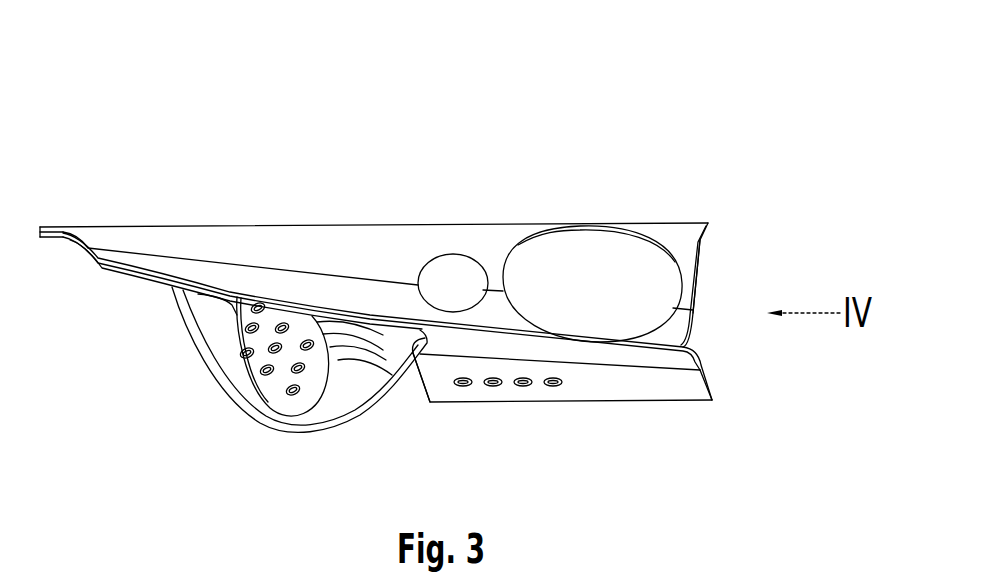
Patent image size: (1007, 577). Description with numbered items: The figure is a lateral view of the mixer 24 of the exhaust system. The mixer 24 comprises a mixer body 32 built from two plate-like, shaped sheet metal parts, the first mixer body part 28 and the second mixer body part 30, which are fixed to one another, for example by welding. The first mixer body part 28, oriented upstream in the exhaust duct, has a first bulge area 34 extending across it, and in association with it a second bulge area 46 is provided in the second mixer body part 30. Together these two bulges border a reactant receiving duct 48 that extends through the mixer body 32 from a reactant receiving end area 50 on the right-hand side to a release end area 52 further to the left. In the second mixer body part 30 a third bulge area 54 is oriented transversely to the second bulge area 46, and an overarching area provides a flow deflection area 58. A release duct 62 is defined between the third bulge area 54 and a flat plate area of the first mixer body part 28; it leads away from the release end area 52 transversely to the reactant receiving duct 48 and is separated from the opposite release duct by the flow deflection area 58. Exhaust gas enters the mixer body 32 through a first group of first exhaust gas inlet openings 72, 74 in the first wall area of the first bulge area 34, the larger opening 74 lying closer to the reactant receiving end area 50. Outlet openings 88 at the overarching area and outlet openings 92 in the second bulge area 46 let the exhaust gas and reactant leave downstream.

The mixer 24 is at (760, 101).
The first mixer body part 28 is at (439, 212).
The second mixer body part 30 is at (426, 416).
The mixer body 32 is at (248, 200).
The first bulge area 34 is at (688, 223).
The second bulge area 46 is at (637, 402).
The reactant receiving duct 48 is at (724, 271).
The reactant receiving end area 50 is at (745, 363).
The release end area 52 is at (379, 335).
The third bulge area 54 is at (343, 427).
The flow deflection area 58 is at (290, 352).
The release duct 62 is at (311, 431).
The first exhaust gas inlet opening 72 is at (461, 279).
The first exhaust gas inlet opening 74 is at (602, 257).
The outlet opening 88 is at (252, 319).
The outlet opening 92 is at (555, 386).